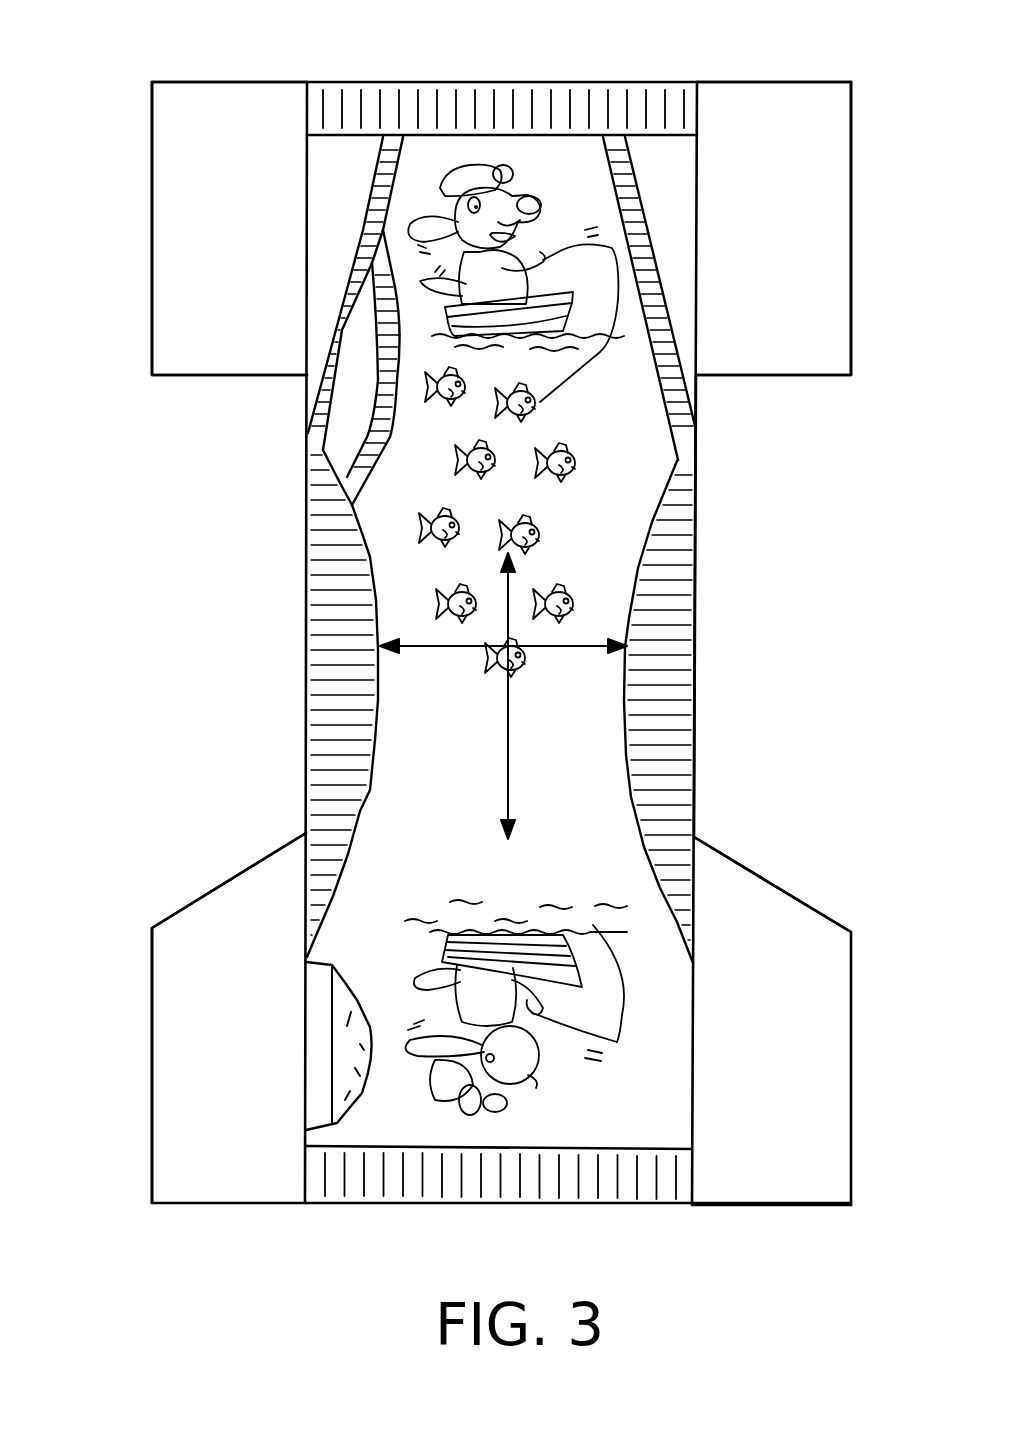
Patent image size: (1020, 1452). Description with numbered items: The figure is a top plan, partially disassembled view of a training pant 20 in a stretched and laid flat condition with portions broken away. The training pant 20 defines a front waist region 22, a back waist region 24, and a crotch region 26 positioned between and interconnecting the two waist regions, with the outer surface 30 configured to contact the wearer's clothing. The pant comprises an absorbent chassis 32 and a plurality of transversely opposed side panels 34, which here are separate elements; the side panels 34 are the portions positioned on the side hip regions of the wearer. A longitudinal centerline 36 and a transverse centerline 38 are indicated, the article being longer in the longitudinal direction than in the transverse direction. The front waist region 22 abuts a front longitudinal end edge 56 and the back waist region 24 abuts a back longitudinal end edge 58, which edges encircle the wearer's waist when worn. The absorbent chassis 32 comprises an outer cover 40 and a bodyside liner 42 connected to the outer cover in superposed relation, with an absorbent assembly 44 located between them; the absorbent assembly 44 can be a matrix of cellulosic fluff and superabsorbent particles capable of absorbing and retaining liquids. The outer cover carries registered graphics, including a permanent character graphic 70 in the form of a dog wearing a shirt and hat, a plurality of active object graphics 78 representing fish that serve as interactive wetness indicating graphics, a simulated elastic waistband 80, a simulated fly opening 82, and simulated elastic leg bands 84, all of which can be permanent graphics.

The training pant 20 is at (118, 120).
The front waist region 22 is at (130, 294).
The back waist region 24 is at (126, 1054).
The crotch region 26 is at (720, 753).
The outer surface 30 is at (797, 306).
The absorbent chassis 32 is at (695, 803).
The side panels 34 is at (262, 230).
The longitudinal centerline 36 is at (517, 742).
The transverse centerline 38 is at (460, 650).
The outer cover 40 is at (378, 523).
The bodyside liner 42 is at (320, 1113).
The absorbent assembly 44 is at (350, 1002).
The front longitudinal end edge 56 is at (737, 80).
The back longitudinal end edge 58 is at (735, 1206).
The permanent character graphic 70 is at (548, 201).
The active object graphics 78 is at (500, 450).
The simulated elastic waistband 80 is at (460, 100).
The simulated fly opening 82 is at (662, 342).
The simulated elastic leg bands 84 is at (677, 587).